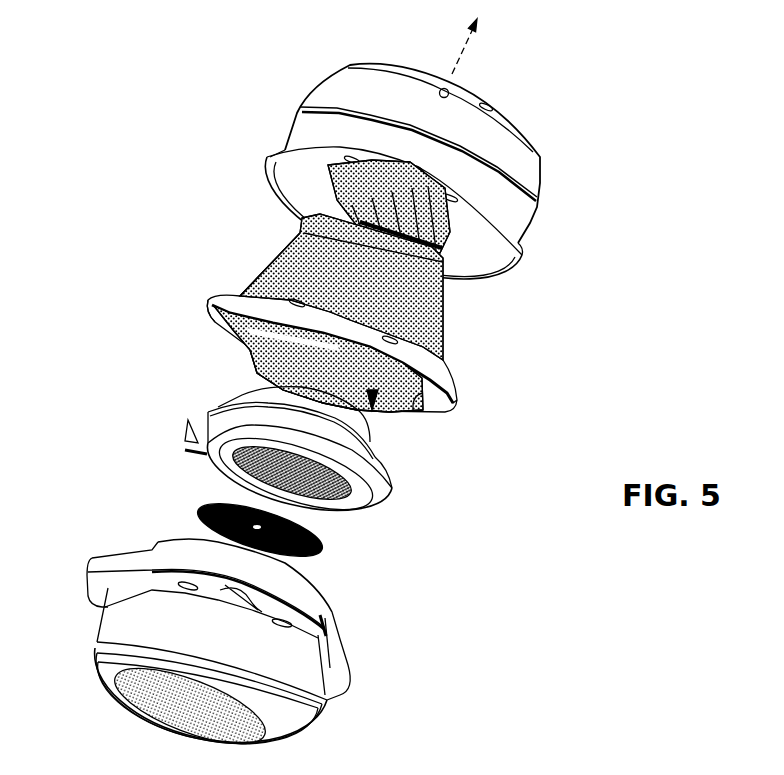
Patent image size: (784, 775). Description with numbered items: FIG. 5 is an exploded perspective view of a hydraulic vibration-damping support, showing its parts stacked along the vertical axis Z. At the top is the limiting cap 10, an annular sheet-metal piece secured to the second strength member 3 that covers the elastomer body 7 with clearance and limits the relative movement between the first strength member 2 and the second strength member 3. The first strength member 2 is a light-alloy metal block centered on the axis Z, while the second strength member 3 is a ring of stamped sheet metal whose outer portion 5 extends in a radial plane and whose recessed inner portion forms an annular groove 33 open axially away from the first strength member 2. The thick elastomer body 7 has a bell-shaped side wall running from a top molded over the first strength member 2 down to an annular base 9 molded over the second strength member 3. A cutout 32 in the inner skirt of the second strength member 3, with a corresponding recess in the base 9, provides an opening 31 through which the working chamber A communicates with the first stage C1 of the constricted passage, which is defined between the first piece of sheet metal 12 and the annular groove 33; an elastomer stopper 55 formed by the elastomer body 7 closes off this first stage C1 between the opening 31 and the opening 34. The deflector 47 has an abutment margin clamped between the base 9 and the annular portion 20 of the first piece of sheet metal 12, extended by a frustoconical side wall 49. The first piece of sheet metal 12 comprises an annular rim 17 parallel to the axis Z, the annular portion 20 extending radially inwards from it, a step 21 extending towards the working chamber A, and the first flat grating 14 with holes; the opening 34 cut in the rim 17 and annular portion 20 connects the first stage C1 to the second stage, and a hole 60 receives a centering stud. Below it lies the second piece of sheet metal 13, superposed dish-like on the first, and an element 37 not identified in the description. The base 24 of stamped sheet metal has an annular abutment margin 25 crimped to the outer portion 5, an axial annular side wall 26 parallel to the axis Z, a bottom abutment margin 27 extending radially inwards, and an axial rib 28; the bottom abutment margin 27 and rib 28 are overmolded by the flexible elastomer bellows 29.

The limiting cap 10 is at (531, 151).
The first strength member 2 is at (430, 231).
The elastomer body 7 is at (423, 317).
The side wall 49 is at (292, 243).
The outer portion 5 is at (410, 360).
The second strength member 3 is at (450, 405).
The elastomer stopper 55 is at (250, 296).
The annular groove 33 is at (457, 407).
The annular base 9 is at (263, 351).
The opening 31 is at (300, 347).
The cutout 32 is at (332, 346).
The working chamber A is at (375, 408).
The first stage C1 is at (415, 407).
The deflector 47 is at (370, 440).
The annular portion 20 is at (217, 463).
The first piece of sheet metal 12 is at (398, 508).
The first flat grating 14 is at (377, 522).
The annular rim 17 is at (377, 495).
The step 21 is at (320, 507).
The opening 34 is at (183, 427).
The hole 60 is at (190, 453).
The disk 37 is at (320, 553).
The base 24 is at (349, 652).
The second piece of sheet metal 13 is at (333, 608).
The annular abutment margin 25 is at (157, 583).
The axial annular side wall 26 is at (307, 703).
The bottom abutment margin 27 is at (100, 657).
The axial rib 28 is at (107, 670).
The flexible bellows 29 is at (197, 717).
The vertical axis Z is at (464, 57).